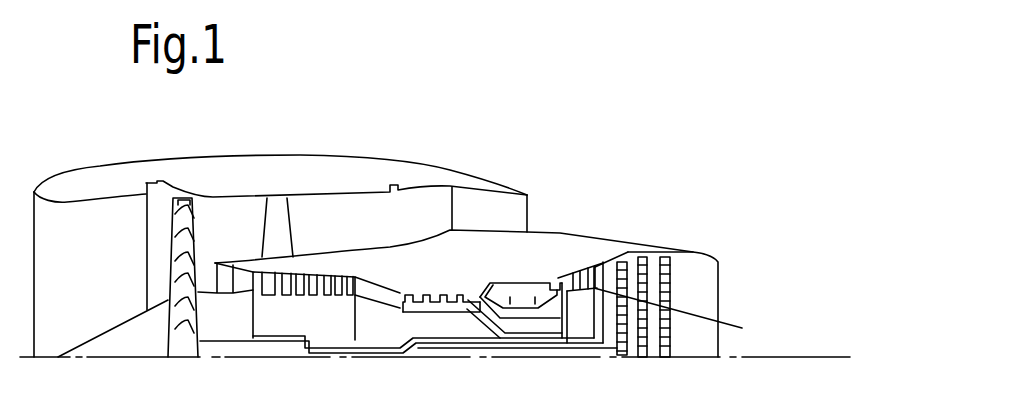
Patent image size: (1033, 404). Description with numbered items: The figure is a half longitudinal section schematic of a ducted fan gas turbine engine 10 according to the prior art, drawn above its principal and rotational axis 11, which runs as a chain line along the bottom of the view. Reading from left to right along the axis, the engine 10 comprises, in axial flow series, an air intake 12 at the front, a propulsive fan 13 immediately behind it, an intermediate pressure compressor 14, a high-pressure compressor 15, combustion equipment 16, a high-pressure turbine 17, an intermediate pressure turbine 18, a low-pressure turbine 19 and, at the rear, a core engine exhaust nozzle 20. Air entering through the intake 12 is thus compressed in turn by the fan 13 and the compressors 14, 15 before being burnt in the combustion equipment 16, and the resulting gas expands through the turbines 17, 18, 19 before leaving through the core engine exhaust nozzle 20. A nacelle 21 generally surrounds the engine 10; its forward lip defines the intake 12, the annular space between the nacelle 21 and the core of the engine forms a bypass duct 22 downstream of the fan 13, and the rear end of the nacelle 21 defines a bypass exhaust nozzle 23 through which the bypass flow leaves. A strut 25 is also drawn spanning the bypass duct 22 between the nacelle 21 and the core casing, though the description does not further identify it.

The ducted fan gas turbine engine 10 is at (647, 118).
The principal and rotational axis 11 is at (47, 357).
The air intake 12 is at (60, 203).
The propulsive fan 13 is at (177, 197).
The intermediate pressure compressor 14 is at (307, 278).
The high-pressure compressor 15 is at (424, 295).
The combustion equipment 16 is at (490, 283).
The high-pressure turbine 17 is at (560, 267).
The intermediate pressure turbine 18 is at (598, 268).
The low-pressure turbine 19 is at (642, 257).
The core engine exhaust nozzle 20 is at (703, 268).
The nacelle 21 is at (118, 182).
The bypass duct 22 is at (350, 213).
The bypass exhaust nozzle 23 is at (527, 194).
The outlet guide vanes 25 is at (452, 187).